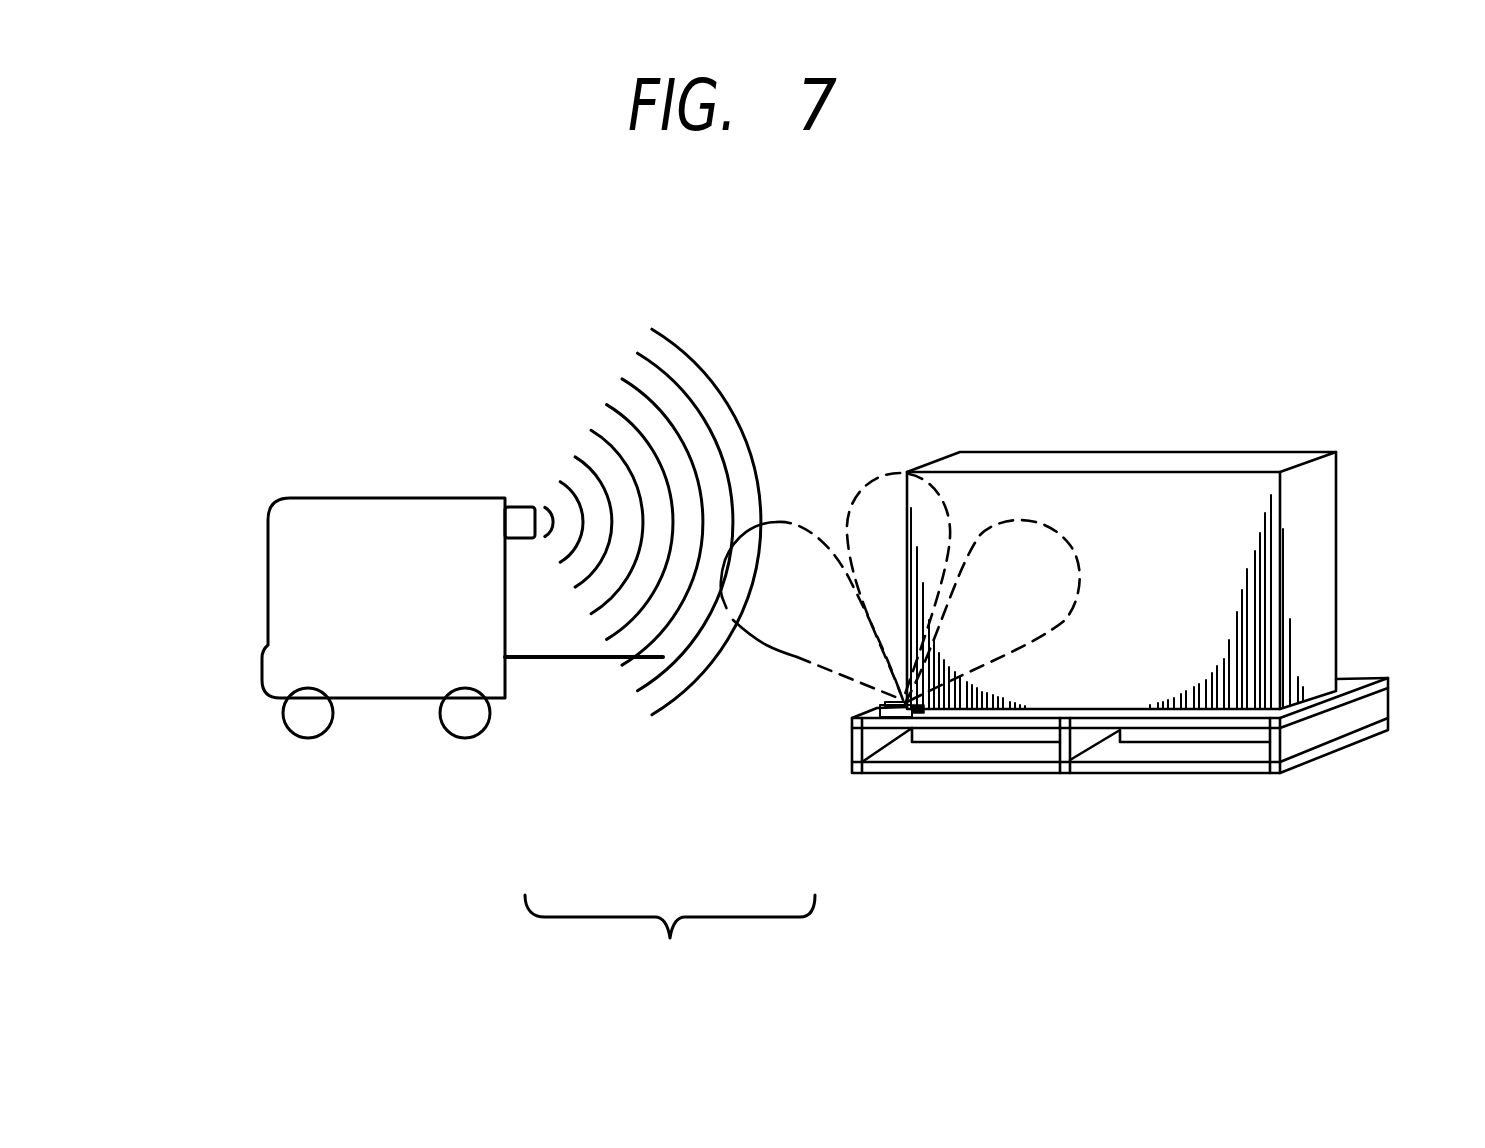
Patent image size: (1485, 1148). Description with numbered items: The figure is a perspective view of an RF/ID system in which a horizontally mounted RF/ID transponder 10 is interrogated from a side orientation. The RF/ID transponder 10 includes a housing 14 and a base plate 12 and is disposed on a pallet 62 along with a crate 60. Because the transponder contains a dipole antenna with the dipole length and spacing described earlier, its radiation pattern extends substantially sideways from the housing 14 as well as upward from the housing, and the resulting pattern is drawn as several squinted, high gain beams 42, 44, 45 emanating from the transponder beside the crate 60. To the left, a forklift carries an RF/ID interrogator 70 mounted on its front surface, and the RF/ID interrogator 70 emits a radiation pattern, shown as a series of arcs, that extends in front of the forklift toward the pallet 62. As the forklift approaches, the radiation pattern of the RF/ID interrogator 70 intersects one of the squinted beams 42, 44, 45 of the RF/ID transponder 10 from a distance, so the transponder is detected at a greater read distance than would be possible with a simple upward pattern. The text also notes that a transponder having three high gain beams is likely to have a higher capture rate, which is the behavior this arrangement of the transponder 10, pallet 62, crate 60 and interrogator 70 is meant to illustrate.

The RF/ID transponder 10 is at (890, 725).
The base plate 12 is at (921, 713).
The housing 14 is at (927, 710).
The radiation lobe 42 is at (885, 473).
The radiation lobe 44 is at (1062, 528).
The radiation lobe 45 is at (783, 523).
The crate 60 is at (1229, 502).
The pallet 62 is at (1141, 738).
The RF/ID interrogator 70 is at (520, 507).